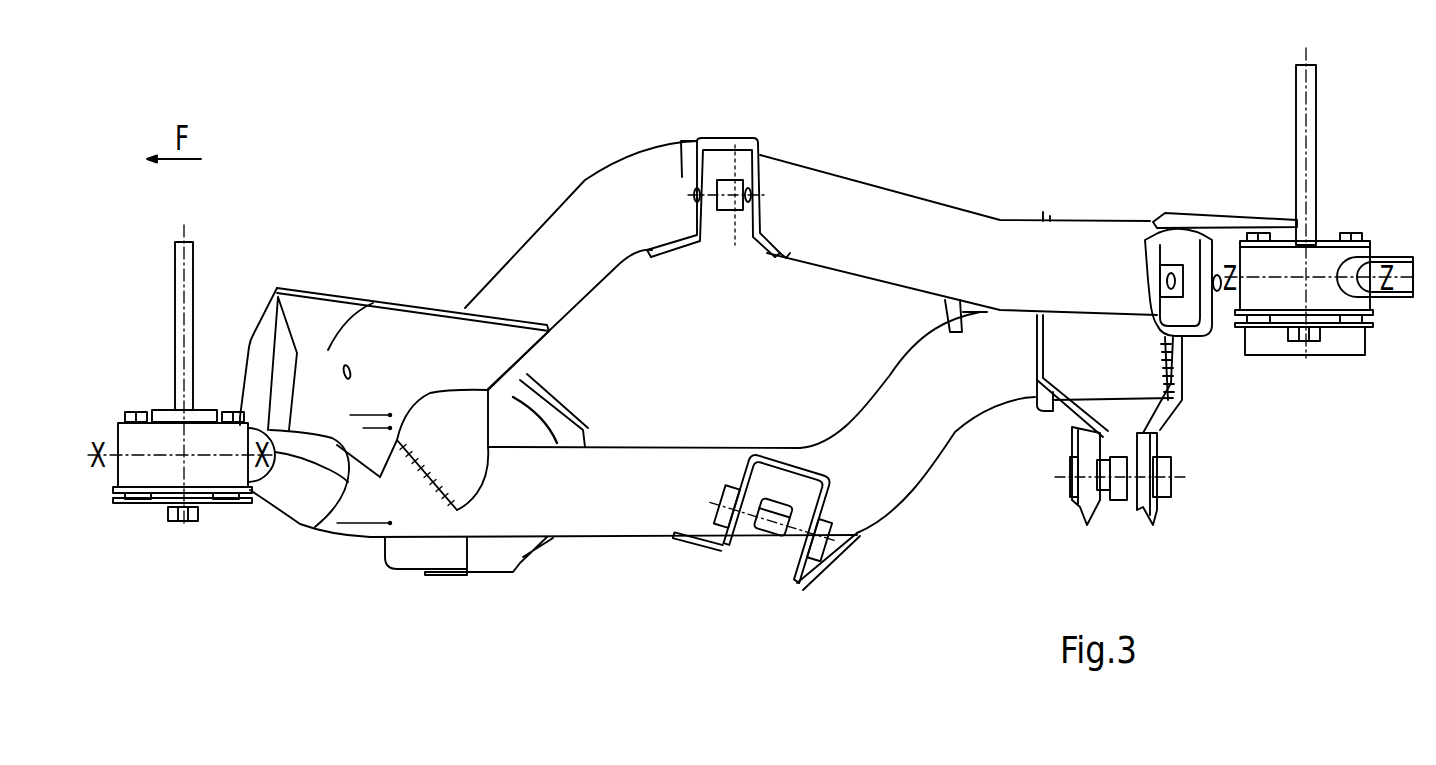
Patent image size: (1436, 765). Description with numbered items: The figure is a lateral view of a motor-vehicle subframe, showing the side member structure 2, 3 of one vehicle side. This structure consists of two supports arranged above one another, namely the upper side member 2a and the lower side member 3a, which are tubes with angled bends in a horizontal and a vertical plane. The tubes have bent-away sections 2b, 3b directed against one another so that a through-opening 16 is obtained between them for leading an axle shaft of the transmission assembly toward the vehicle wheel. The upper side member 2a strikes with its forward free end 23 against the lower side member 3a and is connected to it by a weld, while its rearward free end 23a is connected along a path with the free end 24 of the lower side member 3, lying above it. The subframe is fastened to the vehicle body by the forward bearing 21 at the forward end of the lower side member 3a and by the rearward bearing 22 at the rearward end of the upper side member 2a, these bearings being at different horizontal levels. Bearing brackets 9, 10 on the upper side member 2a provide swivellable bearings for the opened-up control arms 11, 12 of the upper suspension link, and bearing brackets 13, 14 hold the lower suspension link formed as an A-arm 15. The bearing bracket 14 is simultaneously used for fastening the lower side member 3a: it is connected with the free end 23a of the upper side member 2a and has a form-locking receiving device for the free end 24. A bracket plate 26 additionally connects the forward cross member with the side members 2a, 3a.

The side member structure 2 is at (797, 276).
The upper side member 2a is at (848, 190).
The bent-away section 2b is at (500, 268).
The side member structure 3 is at (642, 470).
The lower side member 3a is at (660, 460).
The bent-away section 3b is at (930, 485).
The bearing bracket 9 is at (733, 169).
The bearing bracket 10 is at (1195, 228).
The control arm 11 is at (720, 190).
The control arm 12 is at (1163, 292).
The bearing bracket 13 is at (846, 481).
The bearing bracket 14 is at (1069, 429).
The A-arm 15 is at (1117, 488).
The through-opening 16 is at (749, 344).
The forward bearing 21 is at (147, 478).
The rearward bearing 22 is at (1328, 253).
The forward free end 23 is at (460, 467).
The rearward free end 23a is at (1102, 240).
The free end 24 is at (1175, 385).
The bracket plate 26 is at (412, 323).